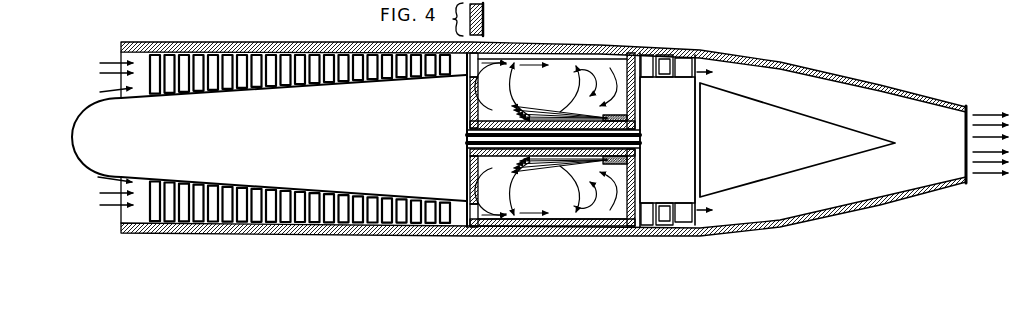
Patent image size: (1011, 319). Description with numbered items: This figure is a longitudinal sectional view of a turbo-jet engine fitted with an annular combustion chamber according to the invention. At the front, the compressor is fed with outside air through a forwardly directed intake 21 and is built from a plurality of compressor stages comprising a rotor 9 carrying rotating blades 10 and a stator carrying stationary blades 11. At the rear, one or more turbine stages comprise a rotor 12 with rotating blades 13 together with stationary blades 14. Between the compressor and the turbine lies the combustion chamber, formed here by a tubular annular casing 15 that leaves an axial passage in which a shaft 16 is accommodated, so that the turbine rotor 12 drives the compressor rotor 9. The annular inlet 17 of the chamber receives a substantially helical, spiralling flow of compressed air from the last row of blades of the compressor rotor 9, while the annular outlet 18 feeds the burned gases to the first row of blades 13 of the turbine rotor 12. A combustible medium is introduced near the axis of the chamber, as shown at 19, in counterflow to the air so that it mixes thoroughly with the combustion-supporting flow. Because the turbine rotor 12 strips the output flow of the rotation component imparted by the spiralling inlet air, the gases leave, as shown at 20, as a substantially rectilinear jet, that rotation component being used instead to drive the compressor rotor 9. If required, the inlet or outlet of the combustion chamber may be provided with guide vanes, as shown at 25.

The compressor rotor 9 is at (207, 110).
The rotating blades 10 is at (239, 67).
The stationary blades 11 is at (281, 62).
The turbine rotor 12 is at (694, 57).
The rotating blades of the turbine 13 is at (650, 56).
The stationary blades of the turbine 14 is at (667, 58).
The tubular annular casing 15 is at (543, 92).
The shaft 16 is at (571, 123).
The annular inlet 17 is at (483, 223).
The annular outlet 18 is at (631, 55).
The combustible medium feed 19 is at (551, 189).
The rectilinear jet 20 is at (980, 167).
The forwardly directed intake 21 is at (114, 204).
The guide vanes 25 is at (483, 24).